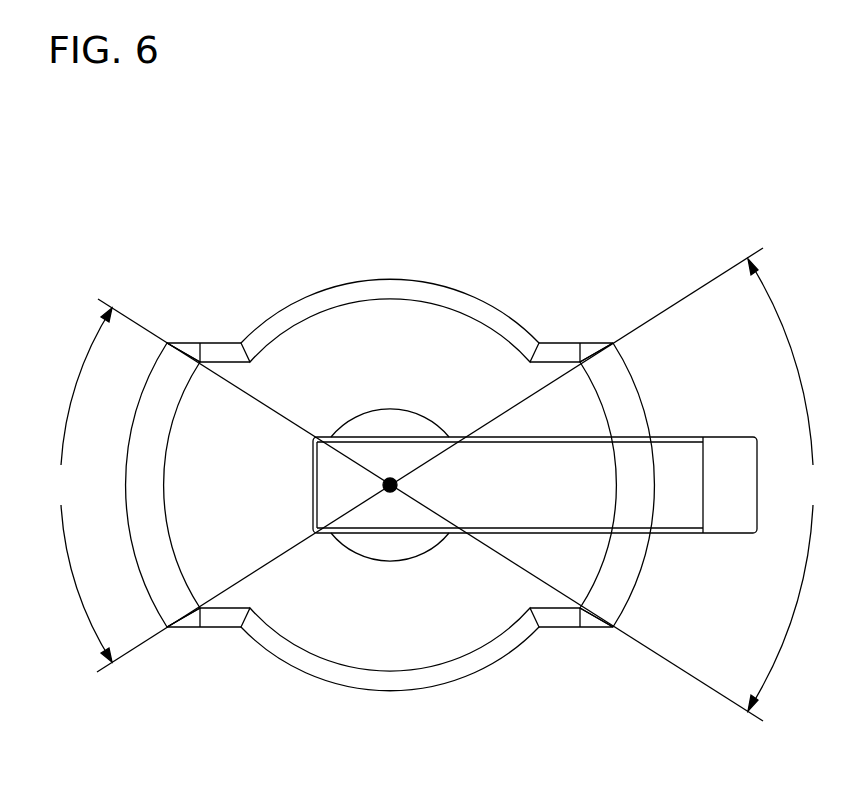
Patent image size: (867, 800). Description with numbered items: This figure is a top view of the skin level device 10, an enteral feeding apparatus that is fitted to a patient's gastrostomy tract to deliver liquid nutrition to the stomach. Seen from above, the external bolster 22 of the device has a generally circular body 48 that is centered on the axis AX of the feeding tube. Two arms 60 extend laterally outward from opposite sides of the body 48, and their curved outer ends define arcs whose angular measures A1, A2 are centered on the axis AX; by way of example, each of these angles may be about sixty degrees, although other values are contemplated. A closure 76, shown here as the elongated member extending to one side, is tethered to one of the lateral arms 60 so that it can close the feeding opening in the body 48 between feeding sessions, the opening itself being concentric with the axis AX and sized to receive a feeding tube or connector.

The skin level device 10 is at (725, 132).
The external bolster 22 is at (523, 323).
The body 48 is at (447, 283).
The arms 60 is at (155, 423).
The closure 76 is at (507, 533).
The axis AX is at (391, 485).
The angle A1 is at (77, 485).
The angle A2 is at (789, 485).